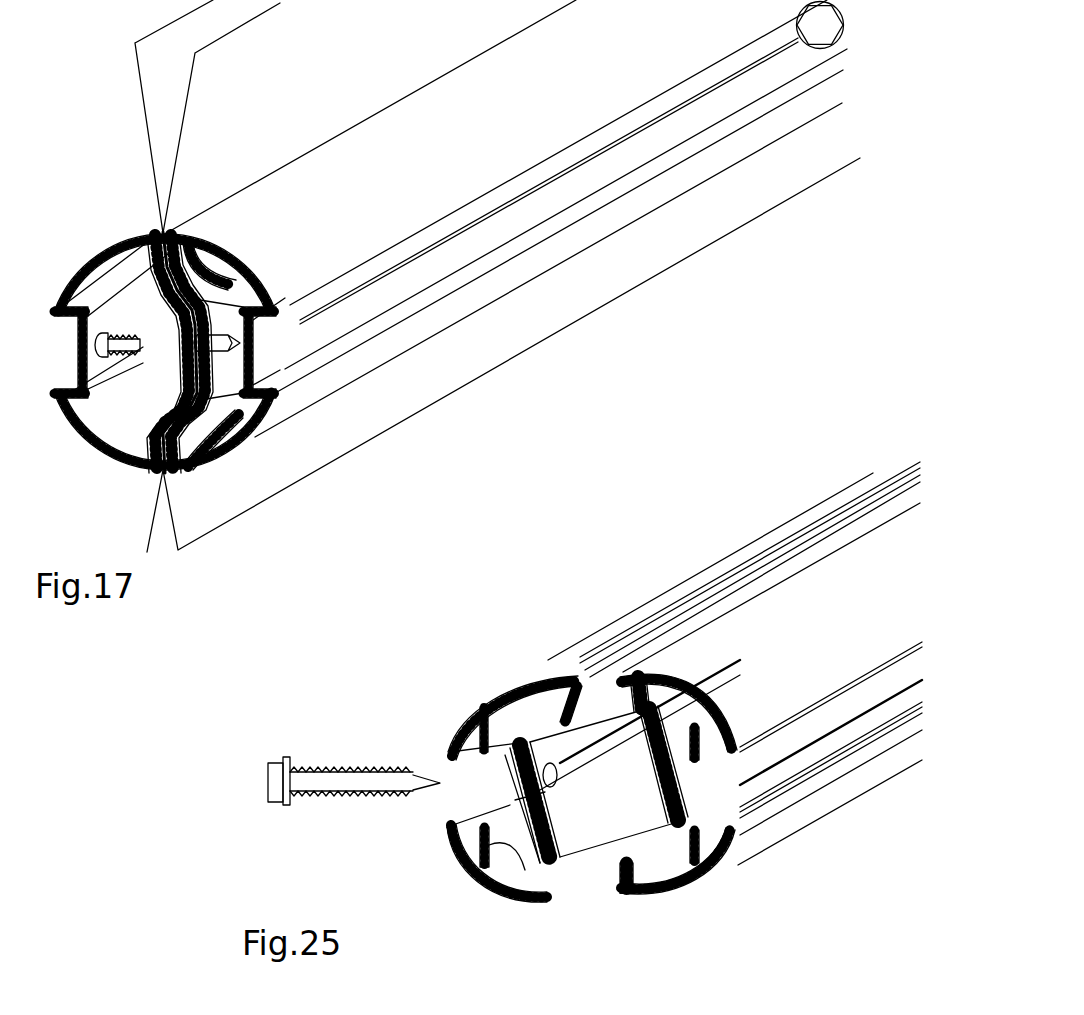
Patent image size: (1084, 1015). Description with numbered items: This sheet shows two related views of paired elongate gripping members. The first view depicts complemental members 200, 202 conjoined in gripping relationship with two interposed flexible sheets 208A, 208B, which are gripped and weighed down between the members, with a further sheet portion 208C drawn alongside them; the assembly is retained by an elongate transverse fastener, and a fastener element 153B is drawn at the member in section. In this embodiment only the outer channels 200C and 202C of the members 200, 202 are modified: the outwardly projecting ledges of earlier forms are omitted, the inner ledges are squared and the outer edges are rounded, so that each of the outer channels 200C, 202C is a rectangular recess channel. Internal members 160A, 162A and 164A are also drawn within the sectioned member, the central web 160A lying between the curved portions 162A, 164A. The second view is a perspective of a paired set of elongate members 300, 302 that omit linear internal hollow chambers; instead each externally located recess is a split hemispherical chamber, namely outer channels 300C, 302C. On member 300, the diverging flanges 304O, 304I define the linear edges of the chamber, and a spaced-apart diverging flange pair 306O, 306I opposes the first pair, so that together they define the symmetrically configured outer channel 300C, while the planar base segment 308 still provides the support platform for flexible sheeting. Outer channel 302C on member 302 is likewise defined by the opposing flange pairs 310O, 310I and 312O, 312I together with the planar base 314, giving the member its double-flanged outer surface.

In FIG. 17, the complemental member 200 is at (92, 256).
In FIG. 17, the outer channel 200C is at (62, 398).
In FIG. 17, the screw 153B is at (98, 345).
In FIG. 17, the central web 160A is at (166, 413).
In FIG. 17, the upper arcuate member 162A is at (218, 268).
In FIG. 17, the lower arcuate member 164A is at (236, 452).
In FIG. 17, the complemental member 202 is at (318, 228).
In FIG. 17, the outer channel 202C is at (300, 300).
In FIG. 17, the flexible sheeting 208A is at (138, 88).
In FIG. 17, the flexible sheeting 208B is at (188, 97).
In FIG. 17, the panel 208C is at (378, 432).
In FIG. 25, the elongate member 300 is at (545, 905).
In FIG. 25, the outer channel 300C is at (470, 770).
In FIG. 25, the elongate member 302 is at (822, 652).
In FIG. 25, the outer channel 302C is at (755, 835).
In FIG. 25, the outer diverging flange 304O is at (450, 748).
In FIG. 25, the inner diverging flange 304I is at (512, 683).
In FIG. 25, the outer diverging flange 306O is at (448, 860).
In FIG. 25, the inner diverging flange 306I is at (515, 905).
In FIG. 25, the planar base segment 308 is at (498, 800).
In FIG. 25, the outer flange 310O is at (728, 718).
In FIG. 25, the inner flange 310I is at (700, 676).
In FIG. 25, the outer flange 312O is at (735, 855).
In FIG. 25, the inner flange 312I is at (652, 905).
In FIG. 25, the planar base 314 is at (762, 762).